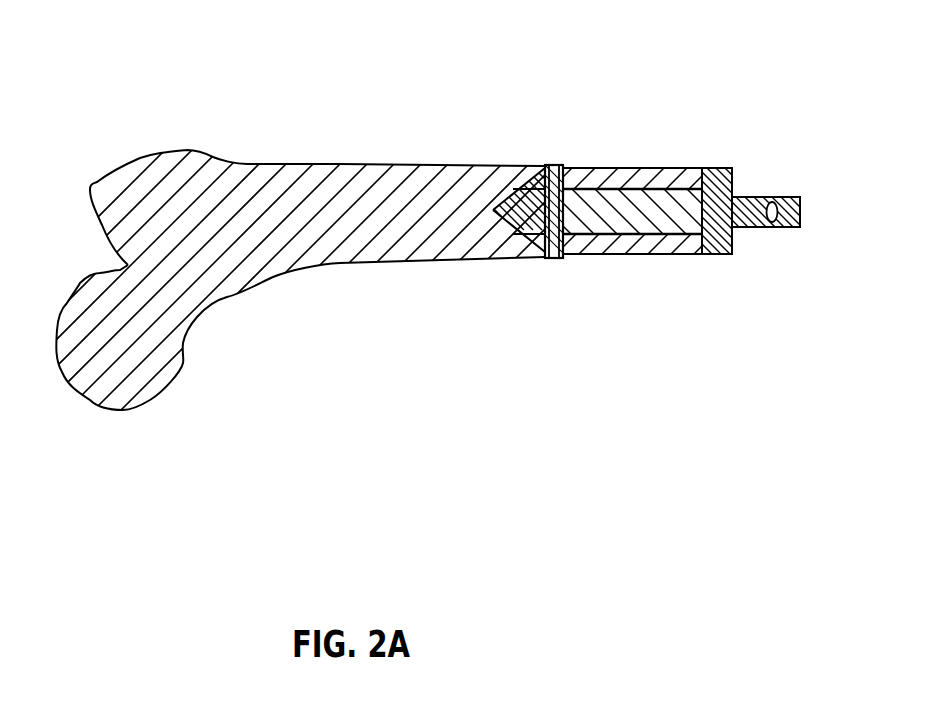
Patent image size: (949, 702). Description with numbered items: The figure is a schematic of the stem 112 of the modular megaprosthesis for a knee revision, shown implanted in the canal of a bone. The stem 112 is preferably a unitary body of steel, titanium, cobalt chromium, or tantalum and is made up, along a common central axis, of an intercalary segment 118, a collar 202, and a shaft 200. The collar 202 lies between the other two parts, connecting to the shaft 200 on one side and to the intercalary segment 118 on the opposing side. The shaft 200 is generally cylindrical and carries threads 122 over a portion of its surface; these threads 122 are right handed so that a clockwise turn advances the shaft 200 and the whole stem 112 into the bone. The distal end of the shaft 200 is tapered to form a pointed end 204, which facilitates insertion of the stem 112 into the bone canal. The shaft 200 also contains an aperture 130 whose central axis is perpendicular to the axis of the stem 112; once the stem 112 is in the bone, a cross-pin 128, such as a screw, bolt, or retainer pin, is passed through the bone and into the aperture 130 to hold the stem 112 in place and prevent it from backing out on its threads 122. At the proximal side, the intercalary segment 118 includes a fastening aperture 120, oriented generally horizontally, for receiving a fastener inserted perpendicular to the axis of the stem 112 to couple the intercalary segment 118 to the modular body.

The stem 112 is at (853, 138).
The intercalary segment 118 is at (748, 195).
The fastening aperture 120 is at (778, 212).
The threads 122 is at (637, 237).
The cross-pin 128 is at (535, 255).
The aperture 130 is at (557, 167).
The shaft 200 is at (620, 215).
The collar 202 is at (727, 253).
The pointed end 204 is at (520, 202).